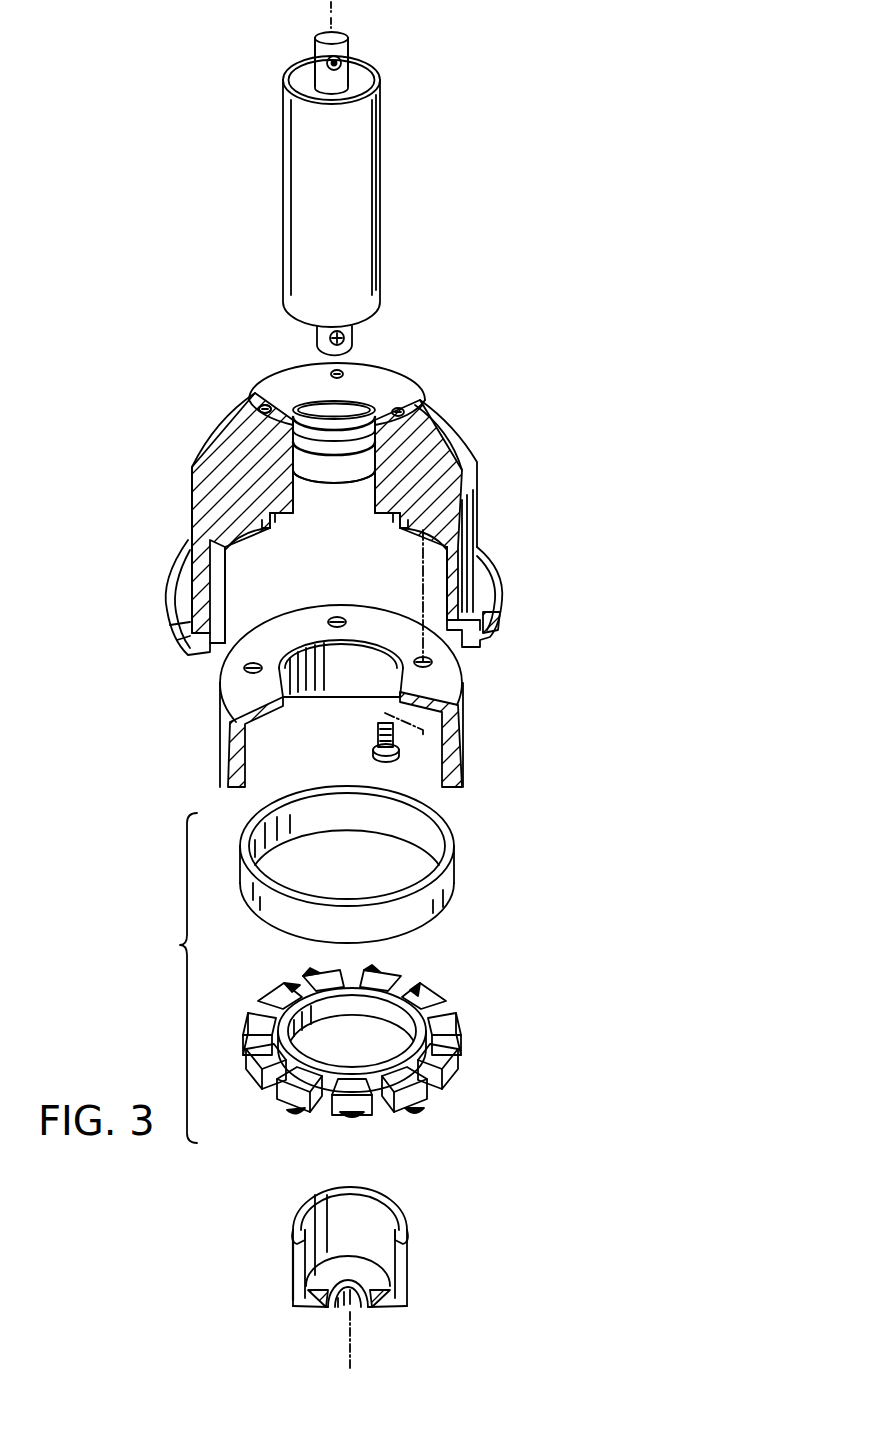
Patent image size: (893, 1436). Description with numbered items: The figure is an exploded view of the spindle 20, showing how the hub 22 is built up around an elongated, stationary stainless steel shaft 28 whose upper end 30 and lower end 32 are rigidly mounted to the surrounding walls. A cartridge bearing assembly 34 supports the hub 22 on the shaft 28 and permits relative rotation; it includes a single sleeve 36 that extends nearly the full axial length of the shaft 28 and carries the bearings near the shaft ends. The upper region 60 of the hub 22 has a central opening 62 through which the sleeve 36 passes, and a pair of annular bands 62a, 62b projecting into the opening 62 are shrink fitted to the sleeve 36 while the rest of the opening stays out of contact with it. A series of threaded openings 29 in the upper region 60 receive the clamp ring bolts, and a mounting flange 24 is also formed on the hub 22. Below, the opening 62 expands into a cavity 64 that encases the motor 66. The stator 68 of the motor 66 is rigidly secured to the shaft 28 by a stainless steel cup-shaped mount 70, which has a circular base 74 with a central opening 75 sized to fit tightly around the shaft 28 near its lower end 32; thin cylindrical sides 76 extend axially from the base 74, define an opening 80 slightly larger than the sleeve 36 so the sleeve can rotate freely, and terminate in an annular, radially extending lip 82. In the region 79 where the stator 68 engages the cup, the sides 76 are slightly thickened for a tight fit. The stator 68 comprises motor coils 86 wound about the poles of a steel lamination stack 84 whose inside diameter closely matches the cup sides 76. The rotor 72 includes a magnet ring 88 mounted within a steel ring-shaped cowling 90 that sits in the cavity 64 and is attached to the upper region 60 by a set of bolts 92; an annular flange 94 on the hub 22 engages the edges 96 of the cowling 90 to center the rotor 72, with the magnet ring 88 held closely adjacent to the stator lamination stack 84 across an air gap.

The motor assembly 20 is at (500, 245).
The hub 22 is at (228, 403).
The mounting flange 24 is at (485, 568).
The stationary shaft 28 is at (311, 40).
The threaded openings 29 is at (266, 405).
The upper end 30 is at (345, 46).
The lower end 32 is at (355, 346).
The cartridge bearing assembly 34 is at (394, 78).
The sleeve 36 is at (383, 133).
The upper region 60 is at (212, 452).
The central opening 62 is at (345, 410).
The annular band 62a is at (372, 447).
The annular band 62b is at (372, 505).
The cavity 64 is at (234, 574).
The motor 66 is at (172, 978).
The stator 68 is at (512, 1081).
The cup-shaped mount 70 is at (364, 1253).
The rotor 72 is at (542, 882).
The circular base 74 is at (384, 1305).
The central opening 75 is at (340, 1305).
The cylindrical sides 76 is at (378, 1213).
The region 79 is at (292, 1248).
The opening 80 is at (352, 1212).
The lip 82 is at (294, 1222).
The lamination stack 84 is at (360, 1041).
The motor coils 86 is at (277, 992).
The magnet ring 88 is at (453, 832).
The cowling 90 is at (218, 712).
The bolts 92 is at (378, 738).
The annular flange 94 is at (278, 528).
The edges 96 is at (317, 644).